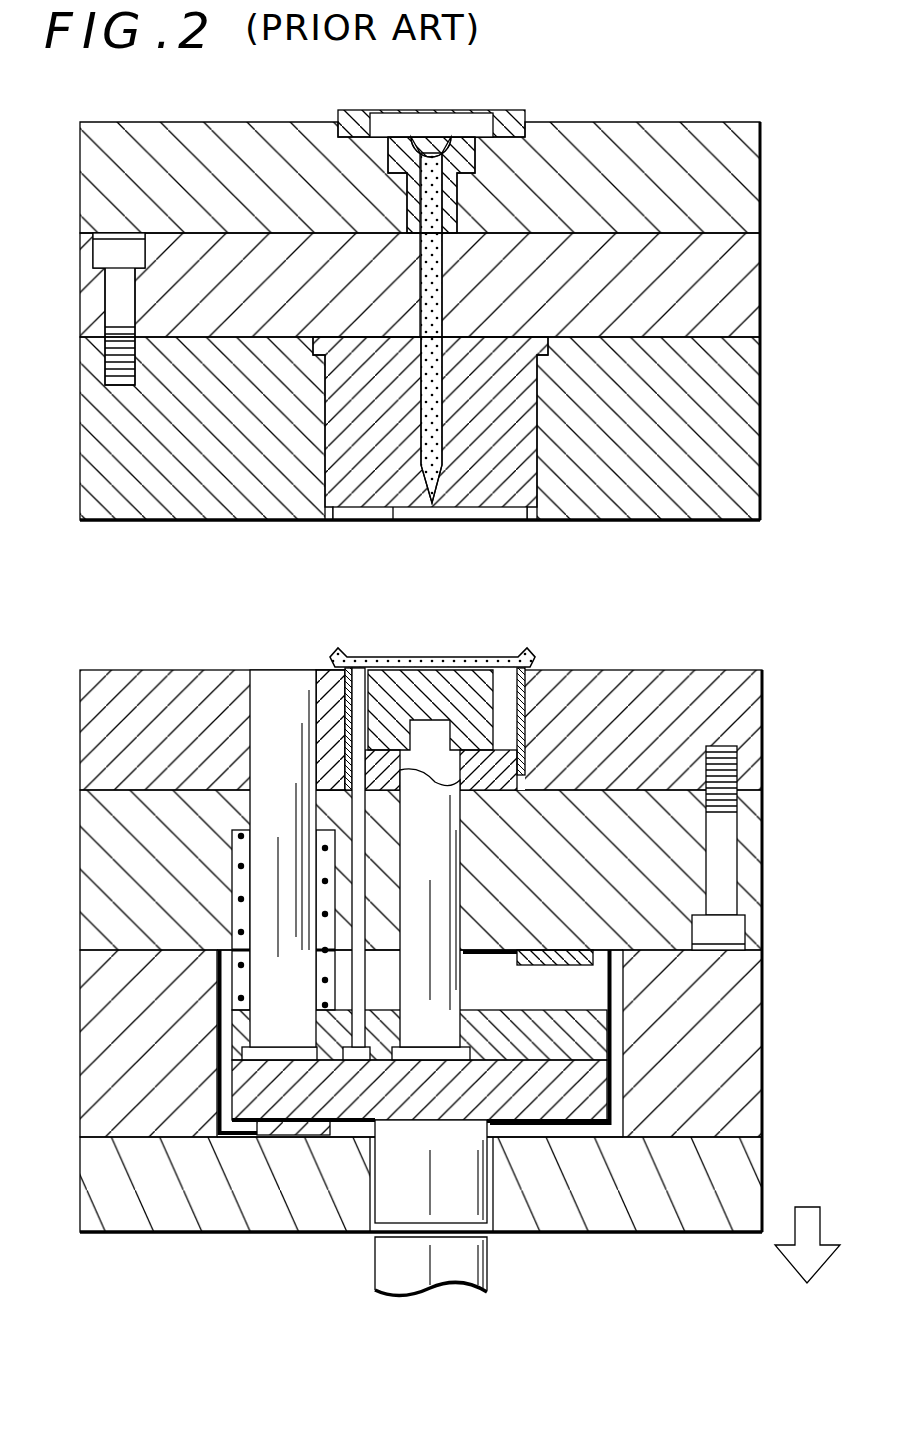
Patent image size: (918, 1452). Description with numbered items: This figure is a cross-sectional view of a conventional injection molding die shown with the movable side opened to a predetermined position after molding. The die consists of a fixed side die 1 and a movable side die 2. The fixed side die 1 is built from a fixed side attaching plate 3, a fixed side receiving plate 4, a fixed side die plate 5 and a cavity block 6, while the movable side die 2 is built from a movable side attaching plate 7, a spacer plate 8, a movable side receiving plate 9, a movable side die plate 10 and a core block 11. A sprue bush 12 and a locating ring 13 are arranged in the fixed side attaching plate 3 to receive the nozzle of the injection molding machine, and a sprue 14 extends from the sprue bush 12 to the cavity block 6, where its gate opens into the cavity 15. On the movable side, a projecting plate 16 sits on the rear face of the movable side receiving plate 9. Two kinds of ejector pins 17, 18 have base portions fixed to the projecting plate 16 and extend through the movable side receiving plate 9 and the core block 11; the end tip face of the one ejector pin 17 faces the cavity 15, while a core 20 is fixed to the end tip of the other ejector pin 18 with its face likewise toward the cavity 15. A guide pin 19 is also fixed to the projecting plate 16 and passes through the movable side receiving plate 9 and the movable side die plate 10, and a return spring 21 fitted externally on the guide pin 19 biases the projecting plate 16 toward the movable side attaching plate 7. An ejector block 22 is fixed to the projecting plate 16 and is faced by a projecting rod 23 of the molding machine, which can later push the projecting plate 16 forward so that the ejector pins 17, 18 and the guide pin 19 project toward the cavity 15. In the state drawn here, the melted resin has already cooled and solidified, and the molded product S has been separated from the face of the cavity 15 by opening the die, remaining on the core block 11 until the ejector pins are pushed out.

The fixed side die 1 is at (466, 323).
The movable side die 2 is at (467, 950).
The fixed side attaching plate 3 is at (738, 158).
The fixed side receiving plate 4 is at (735, 275).
The fixed side die plate 5 is at (738, 372).
The cavity block 6 is at (515, 425).
The movable side attaching plate 7 is at (735, 1168).
The spacer plate 8 is at (735, 1015).
The movable side receiving plate 9 is at (753, 838).
The movable side die plate 10 is at (748, 756).
The core block 11 is at (560, 730).
The sprue bush 12 is at (464, 158).
The locating ring 13 is at (505, 120).
The sprue 14 is at (440, 257).
The cavity 15 is at (396, 518).
The projecting plate 16 is at (585, 1125).
The ejector pin 17 is at (357, 750).
The ejector pin 18 is at (440, 860).
The guide pin 19 is at (270, 672).
The core 20 is at (384, 697).
The return spring 21 is at (233, 860).
The ejector block 22 is at (388, 1178).
The projecting rod 23 is at (473, 1270).
The molded product S is at (468, 655).